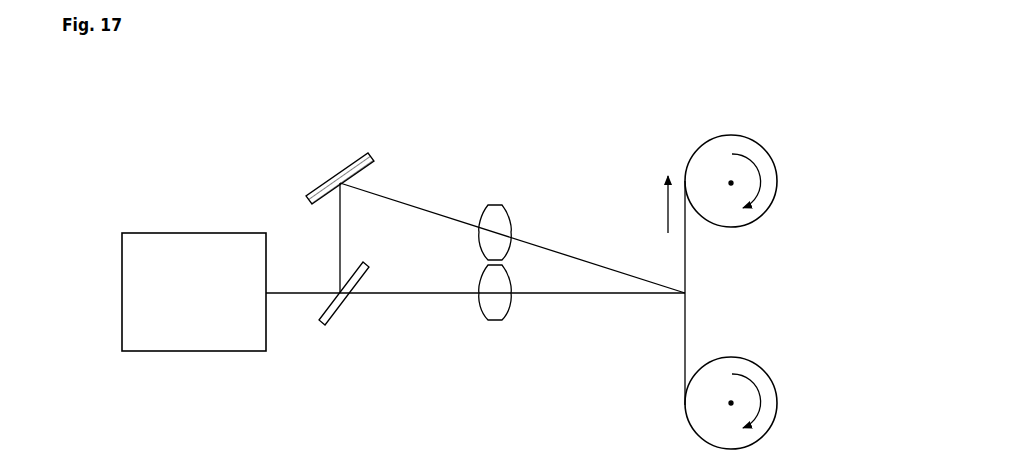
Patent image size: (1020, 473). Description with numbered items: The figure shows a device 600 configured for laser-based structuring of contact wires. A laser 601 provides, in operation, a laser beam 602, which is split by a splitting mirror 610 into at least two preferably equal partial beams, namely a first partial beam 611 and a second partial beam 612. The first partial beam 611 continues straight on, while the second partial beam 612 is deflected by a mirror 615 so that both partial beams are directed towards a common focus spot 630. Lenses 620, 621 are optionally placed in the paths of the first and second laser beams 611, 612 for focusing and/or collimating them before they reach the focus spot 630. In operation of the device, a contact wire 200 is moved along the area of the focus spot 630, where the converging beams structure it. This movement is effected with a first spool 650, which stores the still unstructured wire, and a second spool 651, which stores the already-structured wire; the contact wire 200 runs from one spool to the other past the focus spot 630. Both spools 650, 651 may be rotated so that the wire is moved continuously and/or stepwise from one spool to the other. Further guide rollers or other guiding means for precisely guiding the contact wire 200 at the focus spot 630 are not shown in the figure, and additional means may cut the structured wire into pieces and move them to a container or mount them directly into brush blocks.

The optical arrangement 600 is at (374, 150).
The laser 601 is at (190, 258).
The laser beam 602 is at (294, 291).
The splitting mirror 610 is at (345, 300).
The first partial beam 611 is at (407, 296).
The second partial beam 612 is at (425, 208).
The mirror 615 is at (338, 181).
The lens 620 is at (495, 322).
The lens 621 is at (495, 204).
The focus spot 630 is at (676, 303).
The contact wire 200 is at (686, 254).
The first spool 650 is at (733, 370).
The second spool 651 is at (732, 150).